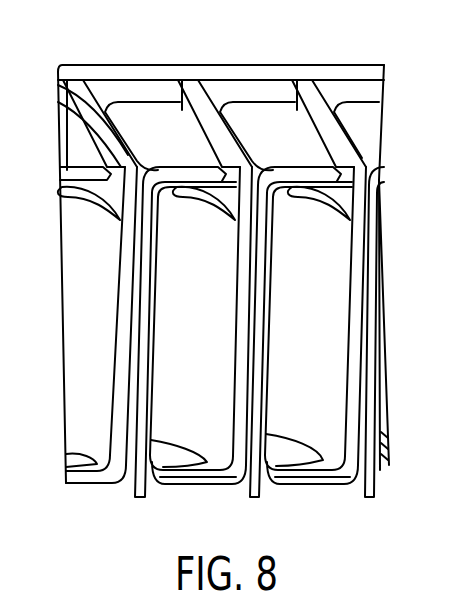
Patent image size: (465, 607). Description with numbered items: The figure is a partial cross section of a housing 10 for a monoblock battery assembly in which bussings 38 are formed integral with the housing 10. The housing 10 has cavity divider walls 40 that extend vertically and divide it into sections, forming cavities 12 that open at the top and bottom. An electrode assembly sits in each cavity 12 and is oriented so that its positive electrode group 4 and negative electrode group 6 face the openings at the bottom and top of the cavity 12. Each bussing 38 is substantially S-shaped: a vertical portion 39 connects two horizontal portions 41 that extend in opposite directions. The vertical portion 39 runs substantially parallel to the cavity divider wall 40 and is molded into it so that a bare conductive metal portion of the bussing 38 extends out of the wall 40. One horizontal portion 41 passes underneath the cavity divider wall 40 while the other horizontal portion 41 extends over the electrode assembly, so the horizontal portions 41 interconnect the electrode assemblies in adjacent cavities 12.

The housing 10 is at (314, 70).
The positive electrode group 4 is at (336, 183).
The negative electrode group 6 is at (312, 472).
The cavity 12 is at (342, 200).
The bussing 38 is at (372, 285).
The vertical portion 39 is at (138, 322).
The cavity divider wall 40 is at (362, 204).
The horizontal portion 41 is at (72, 100).